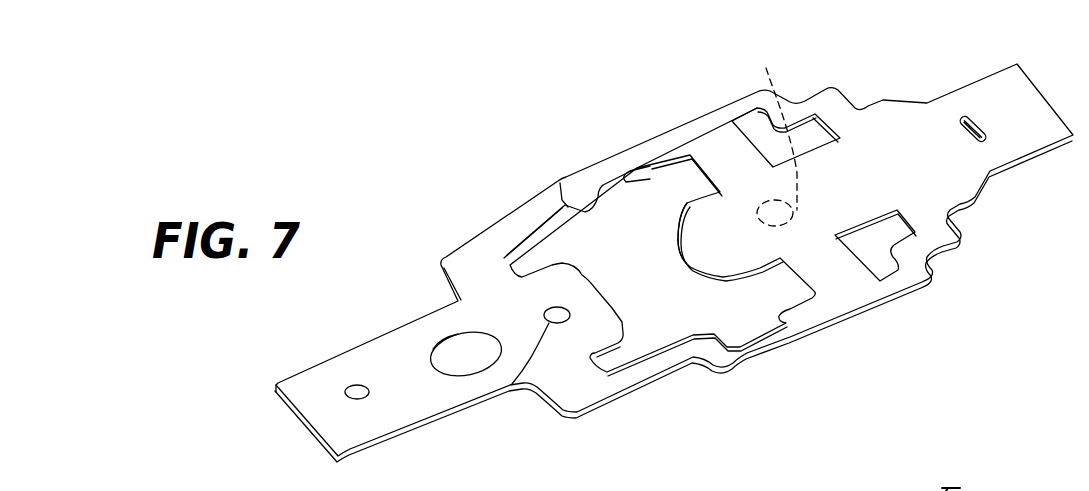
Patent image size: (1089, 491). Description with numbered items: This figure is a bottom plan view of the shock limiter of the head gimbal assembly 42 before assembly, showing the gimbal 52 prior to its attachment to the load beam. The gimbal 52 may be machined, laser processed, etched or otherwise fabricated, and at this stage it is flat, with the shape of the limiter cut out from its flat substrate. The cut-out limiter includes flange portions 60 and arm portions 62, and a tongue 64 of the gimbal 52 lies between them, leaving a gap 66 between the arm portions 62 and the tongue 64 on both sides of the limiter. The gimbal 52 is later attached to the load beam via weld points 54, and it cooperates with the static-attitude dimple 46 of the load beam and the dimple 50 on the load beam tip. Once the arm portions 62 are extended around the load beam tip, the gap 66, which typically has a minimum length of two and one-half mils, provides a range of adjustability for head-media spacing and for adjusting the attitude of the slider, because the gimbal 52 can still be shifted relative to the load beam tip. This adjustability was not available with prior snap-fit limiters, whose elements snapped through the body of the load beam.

The head gimbal assembly 42 is at (674, 263).
The static-attitude dimple 46 is at (466, 350).
The dimple 50 is at (786, 134).
The gimbal 52 is at (935, 128).
The weld points 54 is at (370, 393).
The flange portions 60 is at (720, 147).
The arm portions 62 is at (623, 178).
The tongue 64 is at (690, 262).
The gap 66 is at (686, 197).